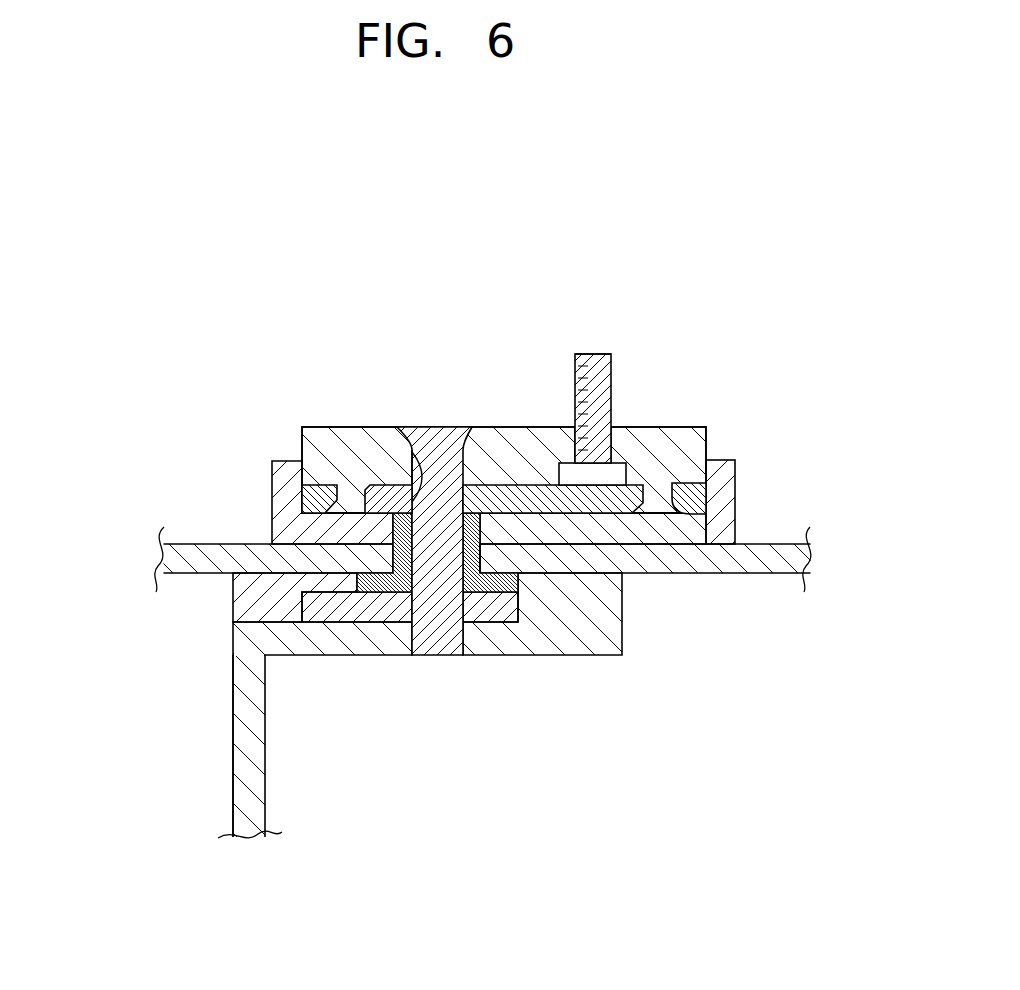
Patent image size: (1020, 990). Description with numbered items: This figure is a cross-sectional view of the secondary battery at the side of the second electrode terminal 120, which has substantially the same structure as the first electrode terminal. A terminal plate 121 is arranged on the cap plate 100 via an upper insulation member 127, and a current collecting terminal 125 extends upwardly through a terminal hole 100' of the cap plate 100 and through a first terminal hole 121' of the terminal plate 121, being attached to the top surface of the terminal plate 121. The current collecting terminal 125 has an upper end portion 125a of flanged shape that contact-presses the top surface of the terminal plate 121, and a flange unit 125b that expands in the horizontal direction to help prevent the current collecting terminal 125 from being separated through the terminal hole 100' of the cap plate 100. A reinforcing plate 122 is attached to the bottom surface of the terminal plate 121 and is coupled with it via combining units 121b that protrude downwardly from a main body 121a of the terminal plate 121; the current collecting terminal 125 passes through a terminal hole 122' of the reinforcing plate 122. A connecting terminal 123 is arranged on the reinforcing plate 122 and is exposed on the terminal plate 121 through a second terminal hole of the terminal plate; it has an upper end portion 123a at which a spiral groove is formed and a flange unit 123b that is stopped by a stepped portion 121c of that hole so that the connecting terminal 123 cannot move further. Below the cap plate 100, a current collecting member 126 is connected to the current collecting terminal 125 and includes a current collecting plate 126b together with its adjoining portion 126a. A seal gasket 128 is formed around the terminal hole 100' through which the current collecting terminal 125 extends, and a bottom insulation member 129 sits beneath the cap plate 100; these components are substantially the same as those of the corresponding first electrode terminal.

The cap plate 100 is at (499, 495).
The terminal hole 100' is at (524, 643).
The second electrode terminal 120 is at (353, 330).
The terminal plate 121 is at (478, 487).
The first terminal hole 121' is at (446, 406).
The main body 121a is at (698, 443).
The combining unit 121b is at (663, 513).
The stepped portion 121c is at (613, 427).
The reinforcing plate 122 is at (256, 503).
The terminal hole 122' is at (372, 431).
The connecting terminal 123 is at (612, 368).
The upper end portion 123a is at (588, 360).
The flange unit 123b is at (622, 470).
The current collecting terminal 125 is at (442, 560).
The upper end portion 125a is at (412, 447).
The flange unit 125b is at (335, 610).
The current collecting member 126 is at (117, 667).
The current collecting member portion 126a is at (257, 637).
The current collecting plate 126b is at (245, 747).
The upper insulation member 127 is at (283, 472).
The seal gasket 128 is at (393, 560).
The bottom insulation member 129 is at (248, 598).